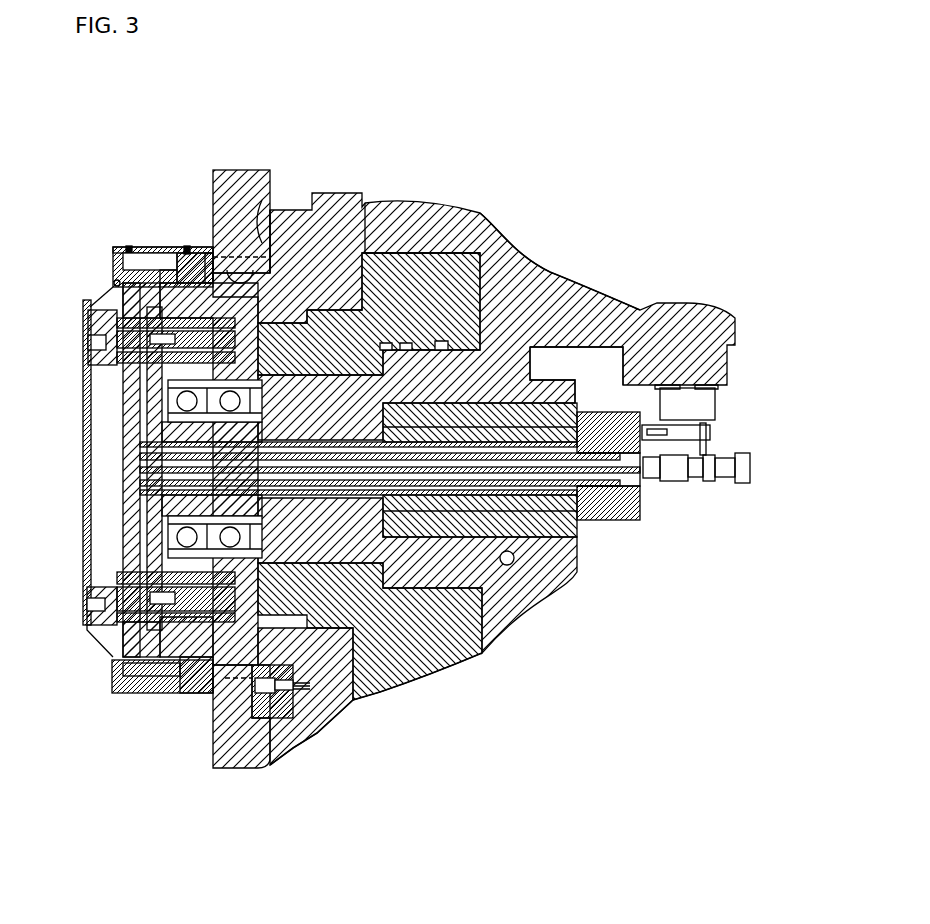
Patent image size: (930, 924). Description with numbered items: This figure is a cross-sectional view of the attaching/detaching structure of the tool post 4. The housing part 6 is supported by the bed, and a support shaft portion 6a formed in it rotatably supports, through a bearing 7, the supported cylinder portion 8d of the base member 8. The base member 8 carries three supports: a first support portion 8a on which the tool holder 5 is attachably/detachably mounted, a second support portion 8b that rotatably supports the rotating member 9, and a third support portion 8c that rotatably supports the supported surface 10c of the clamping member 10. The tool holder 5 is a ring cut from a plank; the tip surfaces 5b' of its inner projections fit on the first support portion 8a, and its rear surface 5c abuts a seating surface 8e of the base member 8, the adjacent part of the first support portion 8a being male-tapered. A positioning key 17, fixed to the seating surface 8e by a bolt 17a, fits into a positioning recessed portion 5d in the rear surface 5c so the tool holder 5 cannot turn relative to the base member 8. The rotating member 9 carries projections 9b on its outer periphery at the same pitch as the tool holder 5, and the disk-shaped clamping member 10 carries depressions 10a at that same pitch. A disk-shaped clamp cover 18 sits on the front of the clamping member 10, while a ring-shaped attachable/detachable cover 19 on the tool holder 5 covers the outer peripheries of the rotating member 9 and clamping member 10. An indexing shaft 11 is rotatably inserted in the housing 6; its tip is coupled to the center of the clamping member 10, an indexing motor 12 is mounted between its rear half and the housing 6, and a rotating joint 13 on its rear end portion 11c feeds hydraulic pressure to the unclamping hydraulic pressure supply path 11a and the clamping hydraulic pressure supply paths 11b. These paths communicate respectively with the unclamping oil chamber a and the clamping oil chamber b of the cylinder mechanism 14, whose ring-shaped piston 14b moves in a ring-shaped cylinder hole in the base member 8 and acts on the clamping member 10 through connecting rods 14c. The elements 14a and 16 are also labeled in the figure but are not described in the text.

The tool post 4 is at (502, 176).
The tool holder 5 is at (242, 166).
The tip surfaces of the projections 5b' is at (240, 189).
The rear surface of the tool holder 5c is at (266, 226).
The positioning recessed portion 5d is at (271, 718).
The housing part 6 is at (540, 225).
The support shaft portion 6a is at (163, 421).
The bearing 7 is at (200, 388).
The base member 8 is at (364, 198).
The first support portion 8a is at (212, 255).
The second support portion 8b is at (180, 268).
The third support portion 8c is at (160, 255).
The supported cylinder portion 8d is at (160, 350).
The seating surface 8e is at (262, 250).
The rotating member 9 is at (187, 250).
The projections of the rotating member 9b is at (200, 253).
The clamping member 10 is at (133, 247).
The depressions of the clamping member 10a is at (123, 260).
The supported surface 10c is at (114, 283).
The indexing shaft 11 is at (369, 428).
The unclamping hydraulic pressure supply path 11a is at (622, 522).
The clamping hydraulic pressure supply paths 11b is at (521, 522).
The rear end portion of the indexing shaft 11c is at (628, 425).
The indexing motor 12 is at (548, 405).
The rotating joint 13 is at (598, 413).
The cylinder mechanism 14 is at (80, 600).
The lower mounting plate 14a is at (162, 572).
The piston 14b is at (150, 572).
The connecting rods 14c is at (118, 580).
The upper mounting block 16 is at (107, 327).
The positioning key 17 is at (292, 712).
The bolt 17a is at (330, 705).
The clamp cover 18 is at (83, 475).
The attachable/detachable cover 19 is at (112, 695).
The unclamping oil chamber a is at (372, 688).
The clamping oil chamber b is at (232, 668).